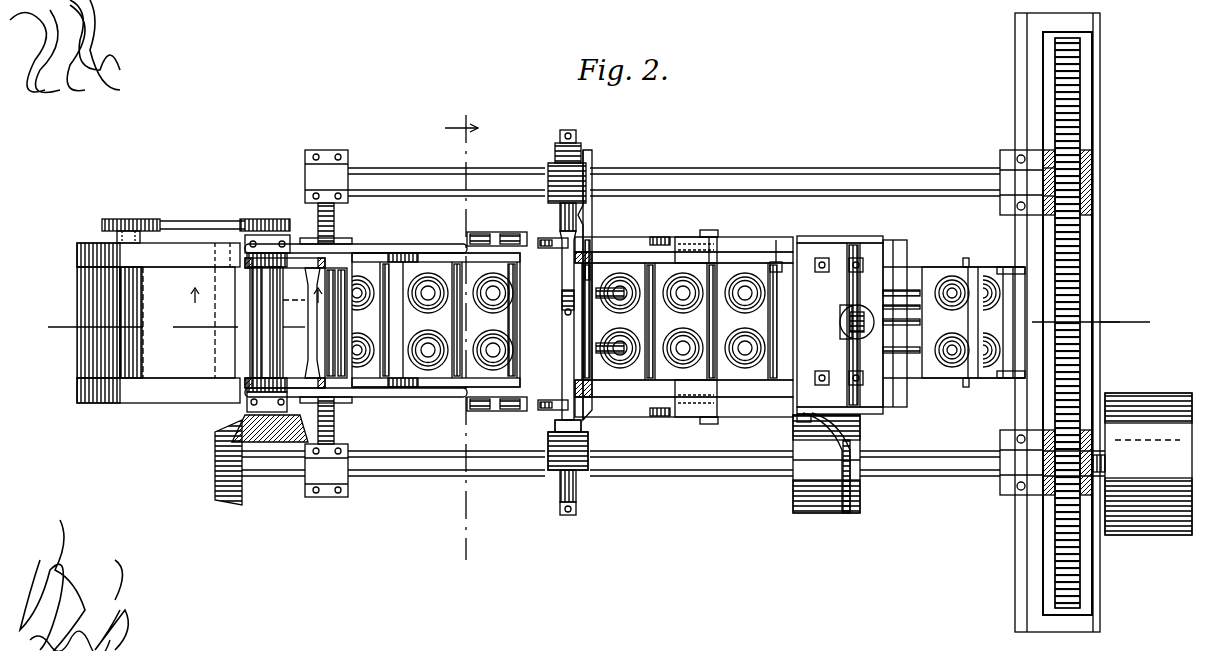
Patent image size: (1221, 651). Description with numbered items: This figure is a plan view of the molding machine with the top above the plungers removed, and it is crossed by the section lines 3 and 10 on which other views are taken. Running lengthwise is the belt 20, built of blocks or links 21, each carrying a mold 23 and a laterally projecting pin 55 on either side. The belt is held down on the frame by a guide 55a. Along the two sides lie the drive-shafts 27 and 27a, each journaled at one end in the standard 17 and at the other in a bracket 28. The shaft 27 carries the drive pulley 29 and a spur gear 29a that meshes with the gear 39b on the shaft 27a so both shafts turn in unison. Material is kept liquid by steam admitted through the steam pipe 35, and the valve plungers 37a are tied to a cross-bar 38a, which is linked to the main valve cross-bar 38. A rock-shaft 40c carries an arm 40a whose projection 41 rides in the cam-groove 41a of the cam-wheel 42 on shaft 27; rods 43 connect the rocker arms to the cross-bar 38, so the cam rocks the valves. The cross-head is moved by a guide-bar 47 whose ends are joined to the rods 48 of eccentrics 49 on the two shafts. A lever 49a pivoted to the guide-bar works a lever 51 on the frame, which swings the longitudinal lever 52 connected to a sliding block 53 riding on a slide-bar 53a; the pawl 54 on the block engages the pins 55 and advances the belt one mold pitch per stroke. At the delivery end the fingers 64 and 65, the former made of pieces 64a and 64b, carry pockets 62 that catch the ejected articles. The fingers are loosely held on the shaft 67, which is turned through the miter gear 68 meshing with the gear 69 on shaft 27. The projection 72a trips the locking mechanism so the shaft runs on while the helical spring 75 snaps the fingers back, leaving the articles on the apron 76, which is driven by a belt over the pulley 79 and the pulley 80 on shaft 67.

The section line 3— 3 is at (598, 322).
The section line 10— 10 is at (257, 306).
The standard 17 is at (1120, 325).
The belt 20 is at (418, 380).
The block or link 21 is at (973, 322).
The mold 23 is at (428, 300).
The drive-shaft 27 is at (697, 468).
The drive-shaft 27a is at (701, 171).
The bracket 28 is at (323, 175).
The drive pulley 29 is at (1185, 460).
The spur gear 29a is at (1058, 552).
The steam pipe 35 is at (843, 326).
The plunger 37a is at (930, 390).
The cross-bar 38 is at (898, 258).
The cross-bar 38a is at (883, 295).
The gear 39b is at (1057, 105).
The arm 40a is at (797, 416).
The rock-shaft 40c is at (857, 308).
The projection 41 is at (796, 416).
The cam-groove 41a is at (846, 514).
The cam-wheel 42 is at (795, 492).
The rod 43 is at (873, 243).
The guide-bar 47 is at (580, 215).
The eccentric rod 48 is at (548, 455).
The eccentric 49 is at (577, 147).
The lever 49a is at (556, 425).
The lever 51 is at (478, 407).
The lever 52 is at (627, 240).
The sliding block 53 is at (690, 245).
The slide-bar 53a is at (742, 400).
The pawl 54 is at (726, 262).
The pin 55 is at (966, 395).
The guide 55a is at (566, 410).
The pocket 62 is at (345, 278).
The finger 64 is at (243, 384).
The finger piece 64a is at (297, 380).
The finger piece 64b is at (325, 398).
The finger 65 is at (302, 262).
The shaft 67 is at (300, 323).
The miter gear 68 is at (236, 418).
The miter gear 69 is at (215, 456).
The lateral projection 72a is at (330, 405).
The helical spring 75 is at (247, 242).
The apron 76 is at (215, 327).
The pulley 79 is at (133, 220).
The pulley 80 is at (270, 234).